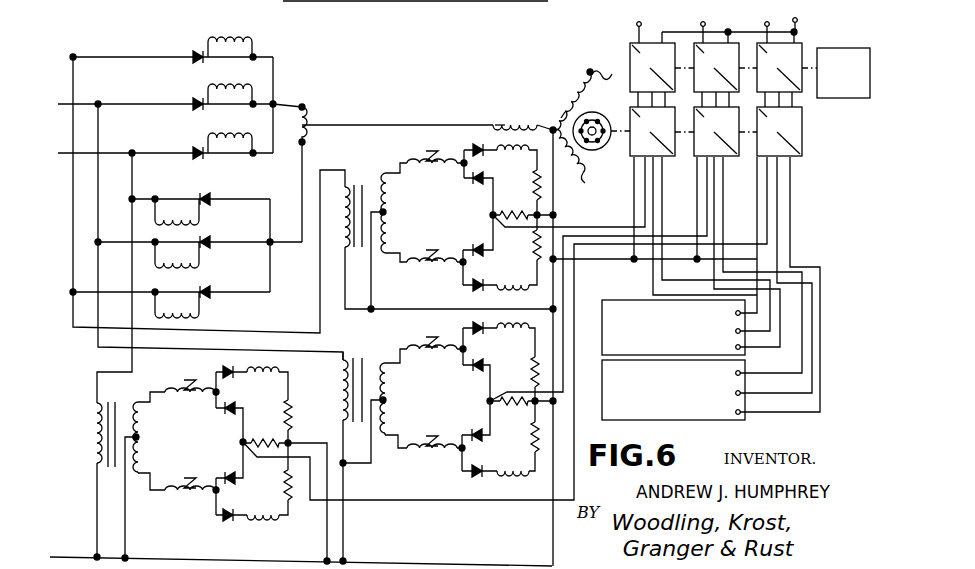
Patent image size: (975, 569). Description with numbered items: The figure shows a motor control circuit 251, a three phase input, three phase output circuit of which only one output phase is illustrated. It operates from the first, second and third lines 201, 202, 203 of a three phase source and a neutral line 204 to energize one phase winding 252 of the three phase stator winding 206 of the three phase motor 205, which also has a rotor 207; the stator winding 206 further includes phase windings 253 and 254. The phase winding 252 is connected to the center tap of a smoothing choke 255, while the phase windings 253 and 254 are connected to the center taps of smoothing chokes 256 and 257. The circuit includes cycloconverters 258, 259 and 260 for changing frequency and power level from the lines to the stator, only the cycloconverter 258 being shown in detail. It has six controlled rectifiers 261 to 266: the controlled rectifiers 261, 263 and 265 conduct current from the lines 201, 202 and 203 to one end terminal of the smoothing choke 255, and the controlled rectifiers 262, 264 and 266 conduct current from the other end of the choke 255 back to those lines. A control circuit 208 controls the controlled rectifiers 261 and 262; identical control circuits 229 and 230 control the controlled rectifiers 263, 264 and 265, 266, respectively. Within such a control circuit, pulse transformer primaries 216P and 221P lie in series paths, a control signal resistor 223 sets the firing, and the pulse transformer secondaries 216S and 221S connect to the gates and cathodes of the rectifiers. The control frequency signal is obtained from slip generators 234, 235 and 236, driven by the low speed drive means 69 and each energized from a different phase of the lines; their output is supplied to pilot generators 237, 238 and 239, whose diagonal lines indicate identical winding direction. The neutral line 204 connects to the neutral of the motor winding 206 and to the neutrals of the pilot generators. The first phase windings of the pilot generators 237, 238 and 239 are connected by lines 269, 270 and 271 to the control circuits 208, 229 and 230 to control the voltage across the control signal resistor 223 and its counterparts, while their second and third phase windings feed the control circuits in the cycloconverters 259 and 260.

The low speed drive means 69 is at (843, 48).
The first line 201 is at (73, 57).
The second line 202 is at (84, 104).
The third line 203 is at (108, 152).
The neutral line 204 is at (64, 557).
The three phase motor 205 is at (537, 69).
The three phase stator winding 206 is at (476, 124).
The rotor 207 is at (597, 112).
The control circuit 208 is at (471, 217).
The pulse transformer secondary 216S is at (252, 42).
The pulse transformer primary 216P is at (517, 180).
The pulse transformer secondary 221S is at (204, 313).
The pulse transformer primary 221P is at (514, 252).
The control signal resistor 223 is at (523, 203).
The control circuit 229 is at (427, 407).
The control circuit 230 is at (178, 448).
The slip generator 234 is at (652, 67).
The slip generator 235 is at (716, 67).
The slip generator 236 is at (779, 67).
The pilot generator 237 is at (652, 131).
The pilot generator 238 is at (716, 131).
The pilot generator 239 is at (779, 131).
The motor control circuit 251 is at (372, 99).
The phase winding 252 is at (495, 125).
The phase winding 253 is at (574, 104).
The phase winding 254 is at (586, 178).
The smoothing choke 255 is at (312, 110).
The smoothing choke 256 is at (590, 72).
The smoothing choke 257 is at (586, 181).
The cycloconverter 258 is at (194, 173).
The cycloconverter 259 is at (713, 355).
The cycloconverter 260 is at (710, 420).
The controlled rectifier 261 is at (199, 57).
The controlled rectifier 262 is at (208, 292).
The controlled rectifier 263 is at (199, 104).
The controlled rectifier 264 is at (208, 242).
The controlled rectifier 265 is at (199, 153).
The controlled rectifier 266 is at (208, 199).
The line 269 is at (591, 228).
The line 270 is at (679, 231).
The line 271 is at (739, 235).